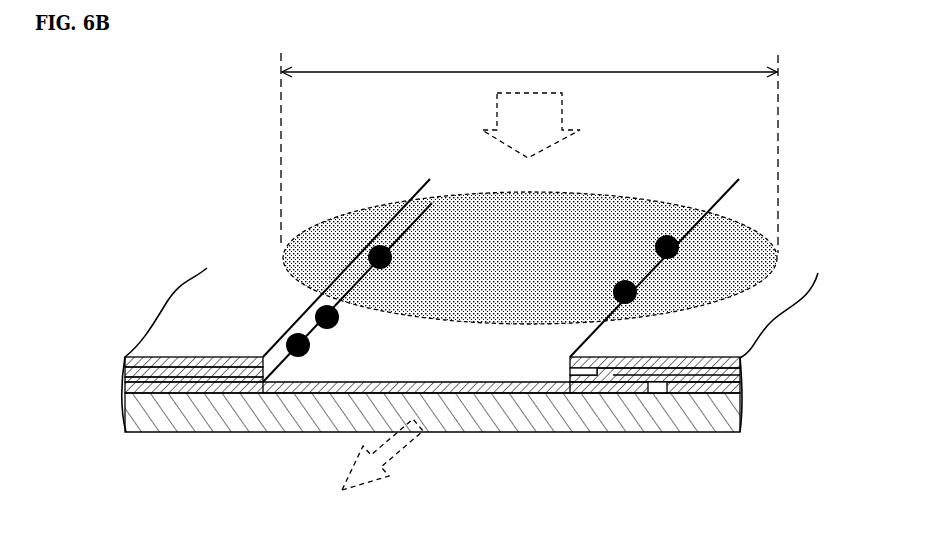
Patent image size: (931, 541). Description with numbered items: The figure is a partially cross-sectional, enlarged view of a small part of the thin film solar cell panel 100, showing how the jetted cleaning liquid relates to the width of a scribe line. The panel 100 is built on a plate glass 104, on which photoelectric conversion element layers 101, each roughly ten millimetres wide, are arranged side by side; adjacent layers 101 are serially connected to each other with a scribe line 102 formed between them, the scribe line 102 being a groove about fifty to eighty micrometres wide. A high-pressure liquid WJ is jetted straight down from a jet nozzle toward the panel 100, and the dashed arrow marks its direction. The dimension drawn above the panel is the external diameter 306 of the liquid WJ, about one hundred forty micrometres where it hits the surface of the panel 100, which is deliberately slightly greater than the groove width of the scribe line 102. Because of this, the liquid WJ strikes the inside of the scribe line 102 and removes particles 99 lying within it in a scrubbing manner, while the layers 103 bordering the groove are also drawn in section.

The solar cell panel 100 is at (155, 311).
The particles / droplets 99 is at (627, 290).
The photoelectric conversion element layer 101 is at (187, 377).
The scribe line 102 is at (510, 363).
The upper cover layer 103 is at (207, 310).
The plate glass 104 is at (308, 413).
The external diameter 306 is at (529, 148).
The high-pressure liquid WJ is at (531, 125).